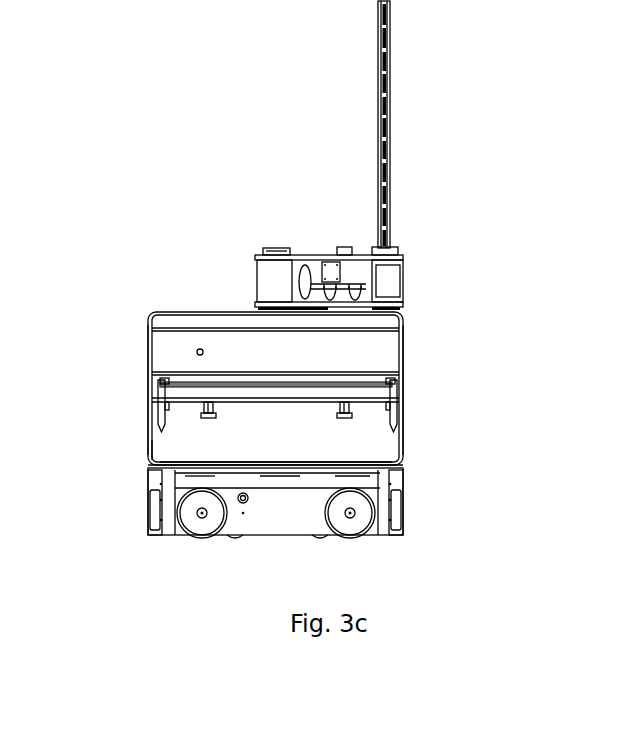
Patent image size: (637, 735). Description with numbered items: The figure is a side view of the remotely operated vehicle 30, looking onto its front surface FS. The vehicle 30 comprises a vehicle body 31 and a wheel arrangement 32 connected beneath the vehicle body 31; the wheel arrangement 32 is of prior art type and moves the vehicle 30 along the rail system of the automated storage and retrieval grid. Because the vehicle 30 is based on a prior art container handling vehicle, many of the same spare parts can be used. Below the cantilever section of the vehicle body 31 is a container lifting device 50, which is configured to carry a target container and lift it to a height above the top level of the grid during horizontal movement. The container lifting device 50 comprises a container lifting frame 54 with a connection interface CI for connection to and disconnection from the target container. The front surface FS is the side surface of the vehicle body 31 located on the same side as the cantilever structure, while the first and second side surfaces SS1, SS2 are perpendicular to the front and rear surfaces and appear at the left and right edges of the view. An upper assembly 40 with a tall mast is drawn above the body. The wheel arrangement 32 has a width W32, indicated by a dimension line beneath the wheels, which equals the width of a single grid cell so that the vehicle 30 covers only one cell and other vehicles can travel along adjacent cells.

The remotely operated vehicle 30 is at (162, 247).
The upper assembly with mast 40 is at (453, 263).
The container lifting device 50 is at (422, 397).
The container lifting frame 54 is at (175, 390).
The connection interface CI is at (207, 407).
The first side surface SS1 is at (405, 390).
The second side surface SS2 is at (145, 382).
The front surface FS is at (271, 435).
The vehicle body 31 is at (297, 430).
The wheel arrangement 32 is at (417, 514).
The width of the wheel arrangement W32 is at (403, 561).